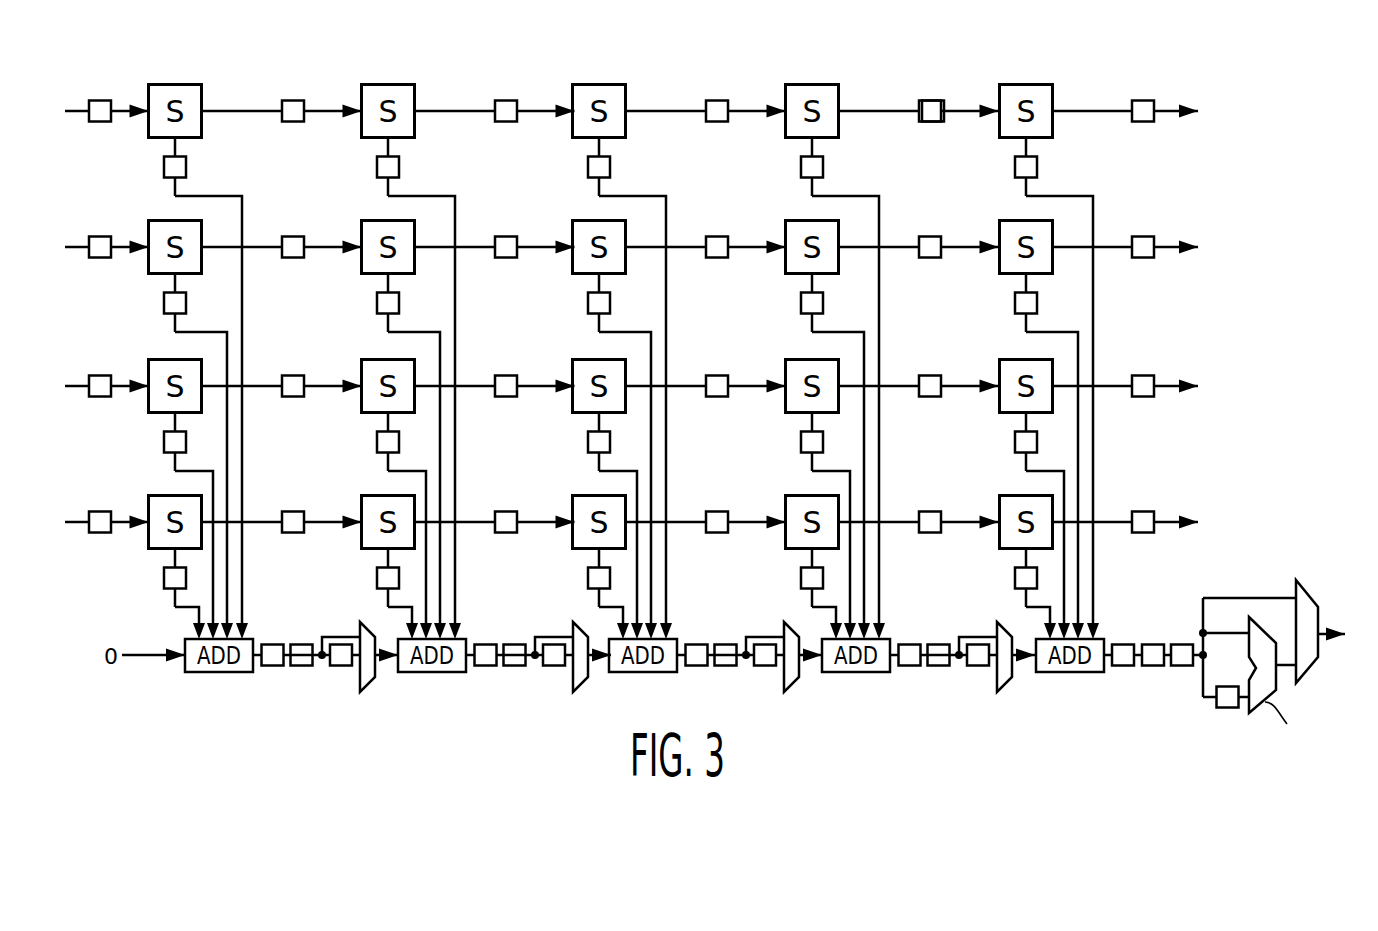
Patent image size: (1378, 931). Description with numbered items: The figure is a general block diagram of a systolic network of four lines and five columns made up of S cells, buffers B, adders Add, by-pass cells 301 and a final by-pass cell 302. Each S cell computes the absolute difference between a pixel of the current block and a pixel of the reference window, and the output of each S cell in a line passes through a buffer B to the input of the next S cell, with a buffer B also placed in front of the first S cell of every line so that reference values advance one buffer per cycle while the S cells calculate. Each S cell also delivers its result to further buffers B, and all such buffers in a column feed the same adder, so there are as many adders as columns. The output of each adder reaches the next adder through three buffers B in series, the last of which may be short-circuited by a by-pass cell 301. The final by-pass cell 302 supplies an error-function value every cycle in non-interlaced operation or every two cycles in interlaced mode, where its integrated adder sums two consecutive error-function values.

The by-pass cell 301 is at (362, 624).
The final by-pass cell 302 is at (1265, 588).
The buffer B is at (930, 101).